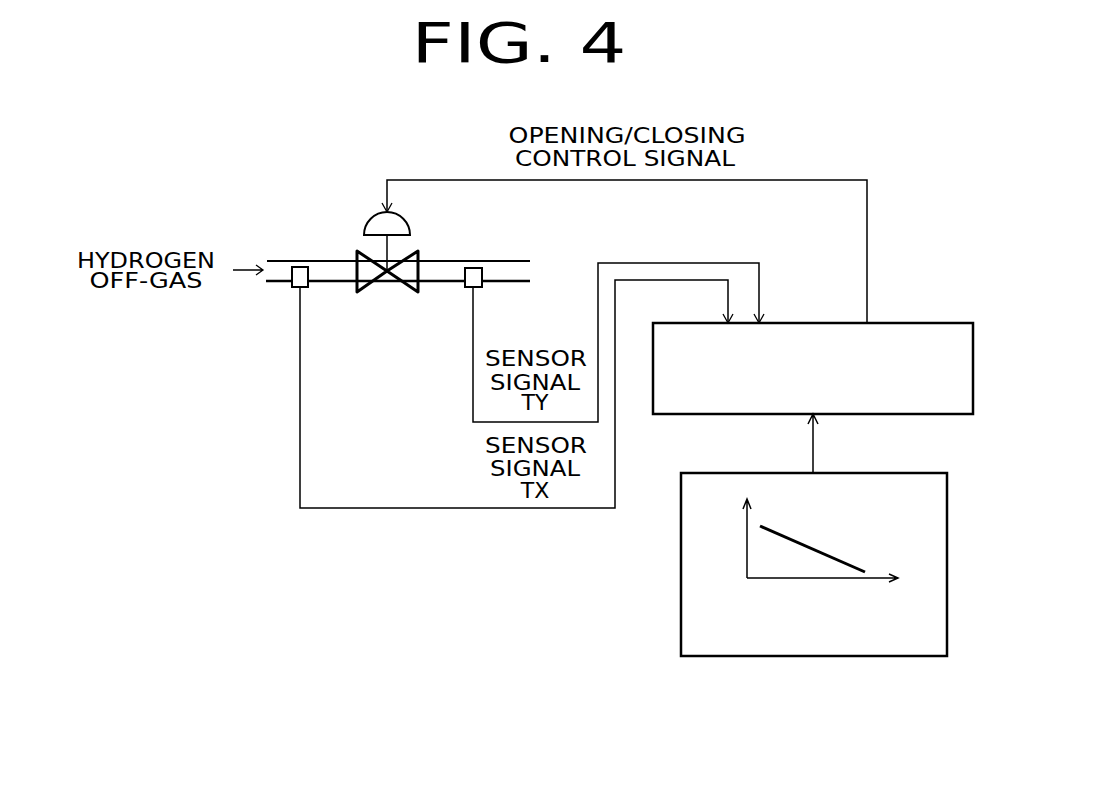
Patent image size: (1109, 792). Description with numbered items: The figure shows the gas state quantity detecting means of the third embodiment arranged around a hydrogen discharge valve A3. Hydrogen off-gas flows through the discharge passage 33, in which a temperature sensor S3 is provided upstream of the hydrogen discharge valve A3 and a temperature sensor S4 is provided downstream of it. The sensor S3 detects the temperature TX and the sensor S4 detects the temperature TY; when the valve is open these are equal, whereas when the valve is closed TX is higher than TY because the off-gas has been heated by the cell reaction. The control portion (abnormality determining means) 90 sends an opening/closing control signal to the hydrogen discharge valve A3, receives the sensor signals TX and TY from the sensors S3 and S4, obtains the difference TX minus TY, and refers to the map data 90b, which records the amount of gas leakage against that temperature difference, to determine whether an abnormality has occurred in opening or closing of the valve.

The discharge passage 33 is at (318, 258).
The hydrogen discharge valve A3 is at (410, 224).
The temperature sensor S3 is at (292, 287).
The temperature sensor S4 is at (465, 287).
The control portion (abnormality determining means) 90 is at (940, 320).
The map data 90b is at (872, 658).